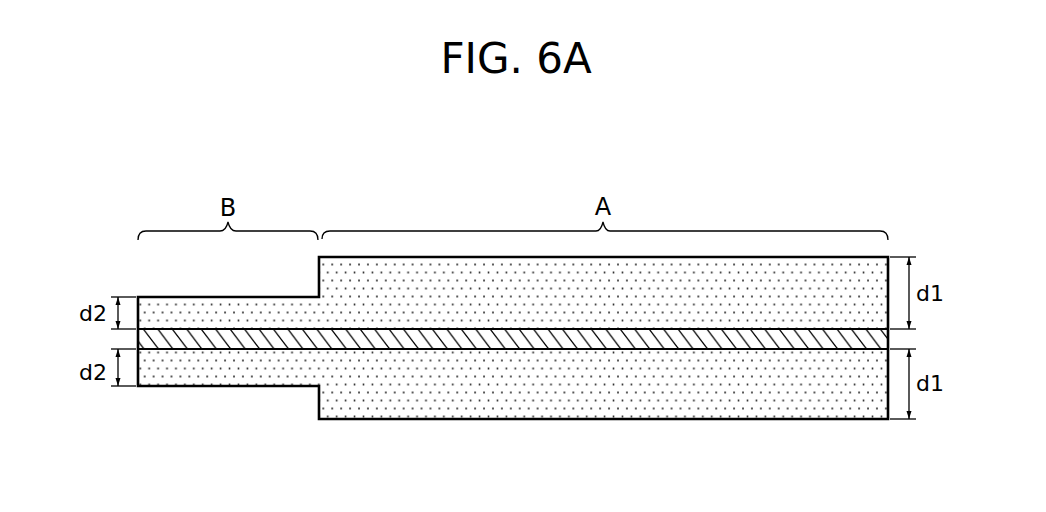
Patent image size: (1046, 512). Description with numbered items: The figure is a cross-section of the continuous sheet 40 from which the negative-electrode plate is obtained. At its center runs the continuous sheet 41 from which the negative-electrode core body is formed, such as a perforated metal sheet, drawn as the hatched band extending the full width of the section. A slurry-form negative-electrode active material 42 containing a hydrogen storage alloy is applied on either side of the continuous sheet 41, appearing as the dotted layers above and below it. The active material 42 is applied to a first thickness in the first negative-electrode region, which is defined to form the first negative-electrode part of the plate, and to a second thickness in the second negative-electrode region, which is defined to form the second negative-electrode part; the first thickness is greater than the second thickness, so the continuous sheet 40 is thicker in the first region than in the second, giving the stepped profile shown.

The continuous sheet 40 is at (768, 208).
The continuous sheet for negative-electrode core body 41 is at (698, 338).
The negative-electrode active material 42 is at (431, 310).